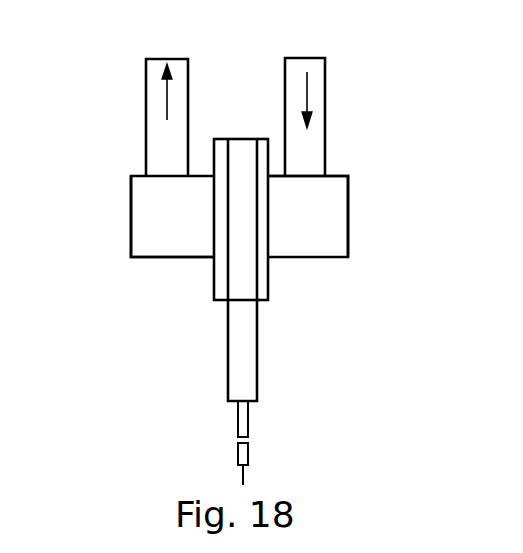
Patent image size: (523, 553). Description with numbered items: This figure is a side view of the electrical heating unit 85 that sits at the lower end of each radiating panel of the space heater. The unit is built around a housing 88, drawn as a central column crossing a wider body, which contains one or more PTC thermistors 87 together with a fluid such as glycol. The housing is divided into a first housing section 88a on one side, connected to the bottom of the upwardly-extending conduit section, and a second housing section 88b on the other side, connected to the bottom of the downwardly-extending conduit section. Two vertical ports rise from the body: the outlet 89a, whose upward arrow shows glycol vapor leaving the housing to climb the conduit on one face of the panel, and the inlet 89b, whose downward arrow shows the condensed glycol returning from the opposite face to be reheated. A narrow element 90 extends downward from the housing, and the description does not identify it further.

The electrical heating unit 85 is at (128, 161).
The PTC thermistor 87 is at (263, 295).
The housing 88 is at (272, 272).
The first housing section 88a is at (167, 245).
The second housing section 88b is at (333, 215).
The outlet 89a is at (152, 88).
The inlet 89b is at (318, 76).
The needle / probe 90 is at (233, 372).